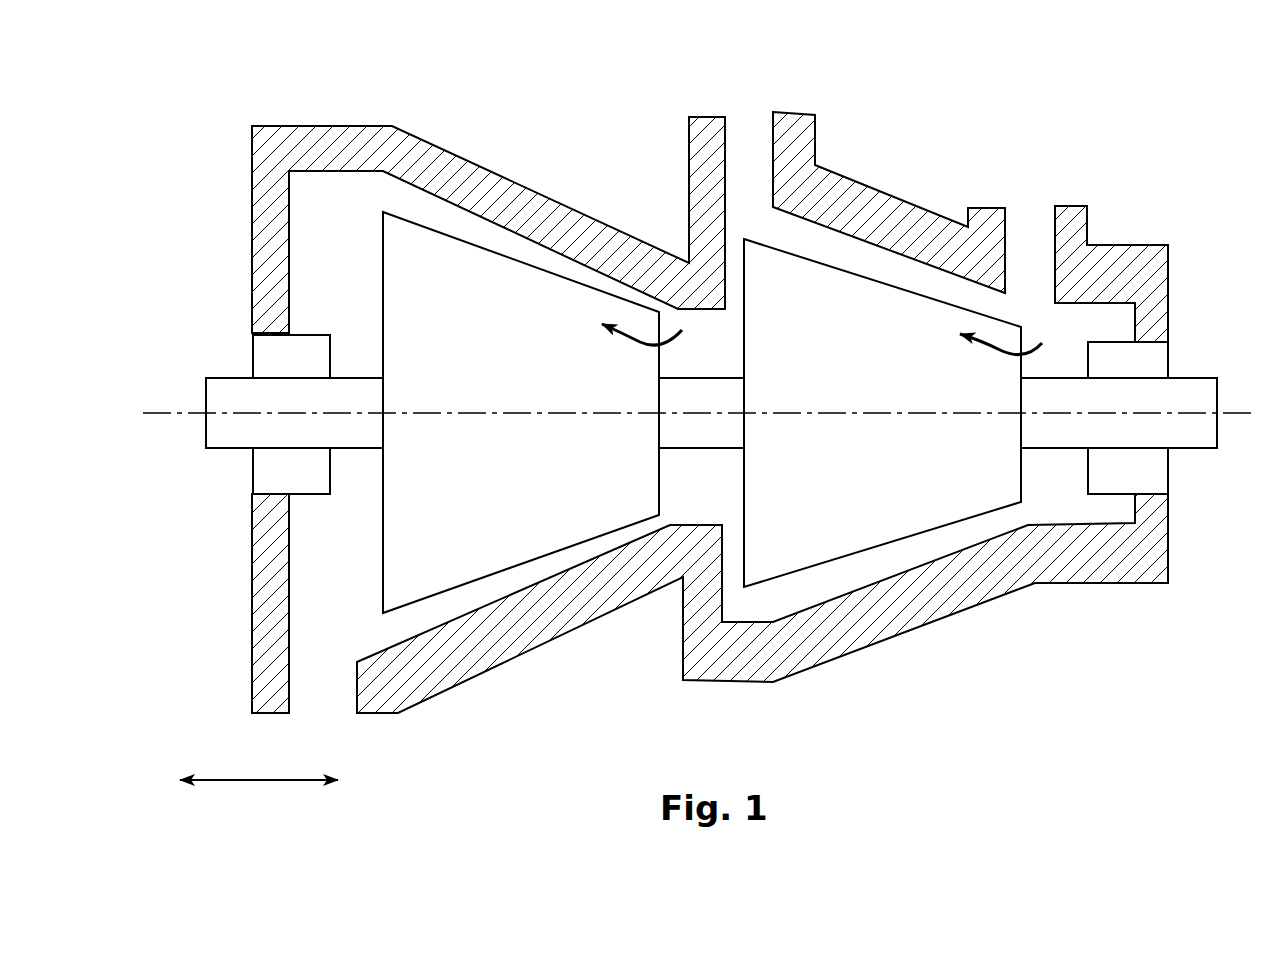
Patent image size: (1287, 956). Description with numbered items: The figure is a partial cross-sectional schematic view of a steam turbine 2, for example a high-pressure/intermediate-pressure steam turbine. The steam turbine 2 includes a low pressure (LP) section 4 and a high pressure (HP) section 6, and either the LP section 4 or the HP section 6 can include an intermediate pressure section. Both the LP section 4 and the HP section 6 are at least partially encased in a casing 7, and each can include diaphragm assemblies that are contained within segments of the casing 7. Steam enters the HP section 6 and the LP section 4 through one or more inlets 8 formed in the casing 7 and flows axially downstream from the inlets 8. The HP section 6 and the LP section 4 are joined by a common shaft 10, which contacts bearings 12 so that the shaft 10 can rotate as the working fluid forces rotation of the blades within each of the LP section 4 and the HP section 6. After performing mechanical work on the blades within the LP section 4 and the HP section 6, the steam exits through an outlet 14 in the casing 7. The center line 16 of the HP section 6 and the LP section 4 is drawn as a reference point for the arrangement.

The steam turbine 2 is at (246, 87).
The low pressure (LP) section 4 is at (532, 412).
The high pressure (HP) section 6 is at (893, 413).
The casing 7 is at (710, 425).
The inlet 8 is at (742, 114).
The common shaft 10 is at (358, 390).
The bearings 12 is at (710, 414).
The outlet 14 is at (334, 717).
The center line (CL) 16 is at (694, 386).